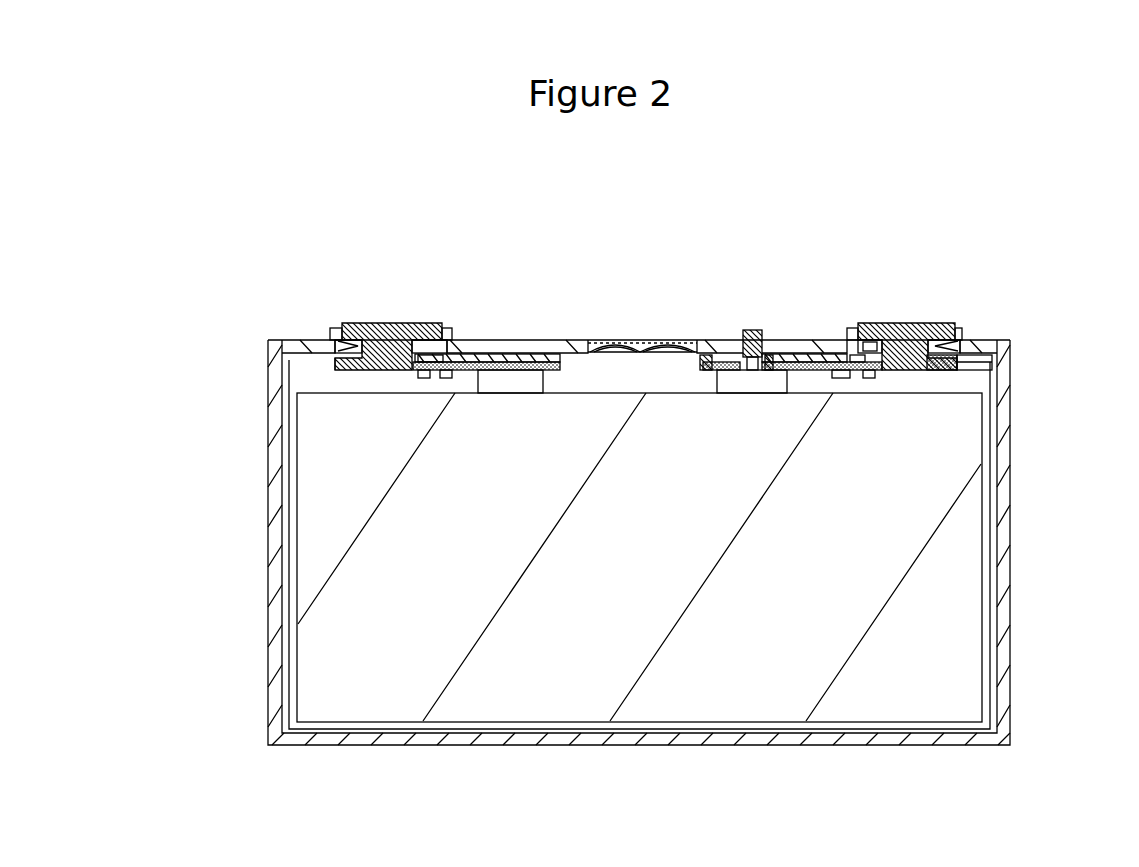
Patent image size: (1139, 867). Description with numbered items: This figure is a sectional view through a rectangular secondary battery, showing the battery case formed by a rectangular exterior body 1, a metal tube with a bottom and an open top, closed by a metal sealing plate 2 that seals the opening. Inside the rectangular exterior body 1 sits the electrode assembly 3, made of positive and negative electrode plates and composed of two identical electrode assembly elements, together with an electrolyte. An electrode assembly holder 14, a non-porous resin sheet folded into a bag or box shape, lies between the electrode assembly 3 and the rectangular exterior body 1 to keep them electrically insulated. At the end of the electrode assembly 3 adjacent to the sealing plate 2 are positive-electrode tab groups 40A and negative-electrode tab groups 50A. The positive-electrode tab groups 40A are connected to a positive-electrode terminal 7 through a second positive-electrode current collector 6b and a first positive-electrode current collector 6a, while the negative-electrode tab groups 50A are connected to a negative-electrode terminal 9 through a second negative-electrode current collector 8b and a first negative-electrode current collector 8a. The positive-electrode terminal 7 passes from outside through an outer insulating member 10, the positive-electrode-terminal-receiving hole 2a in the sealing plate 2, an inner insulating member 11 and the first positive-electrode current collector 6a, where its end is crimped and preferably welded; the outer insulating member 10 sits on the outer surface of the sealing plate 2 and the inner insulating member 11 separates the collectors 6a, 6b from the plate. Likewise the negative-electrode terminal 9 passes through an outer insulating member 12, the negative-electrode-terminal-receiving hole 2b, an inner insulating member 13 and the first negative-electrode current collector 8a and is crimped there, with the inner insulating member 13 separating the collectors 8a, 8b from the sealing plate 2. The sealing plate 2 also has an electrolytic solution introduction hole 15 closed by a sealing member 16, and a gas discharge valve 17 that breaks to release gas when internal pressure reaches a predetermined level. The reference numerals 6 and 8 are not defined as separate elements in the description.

The rectangular exterior body 1 is at (1003, 567).
The sealing plate 2 is at (566, 347).
The positive-electrode-terminal-receiving hole 2a is at (930, 348).
The negative-electrode-terminal-receiving hole 2b is at (338, 350).
The electrode assembly 3 is at (320, 665).
The negative electrode current collector 6 is at (815, 377).
The first positive-electrode current collector 6a is at (967, 370).
The second positive-electrode current collector 6b is at (817, 357).
The positive-electrode terminal 7 is at (907, 327).
The positive electrode current collector 8 is at (426, 386).
The first negative-electrode current collector 8a is at (347, 369).
The second negative-electrode current collector 8b is at (450, 362).
The negative-electrode terminal 9 is at (395, 323).
The outer insulating member 10 is at (960, 330).
The inner insulating member 11 is at (783, 363).
The outer insulating member 12 is at (336, 328).
The inner insulating member 13 is at (537, 363).
The electrode assembly holder 14 is at (991, 620).
The electrolytic solution introduction hole 15 is at (737, 387).
The sealing member 16 is at (753, 330).
The gas discharge valve 17 is at (632, 348).
The positive-electrode tab groups 40A is at (707, 358).
The negative-electrode tab groups 50A is at (505, 383).